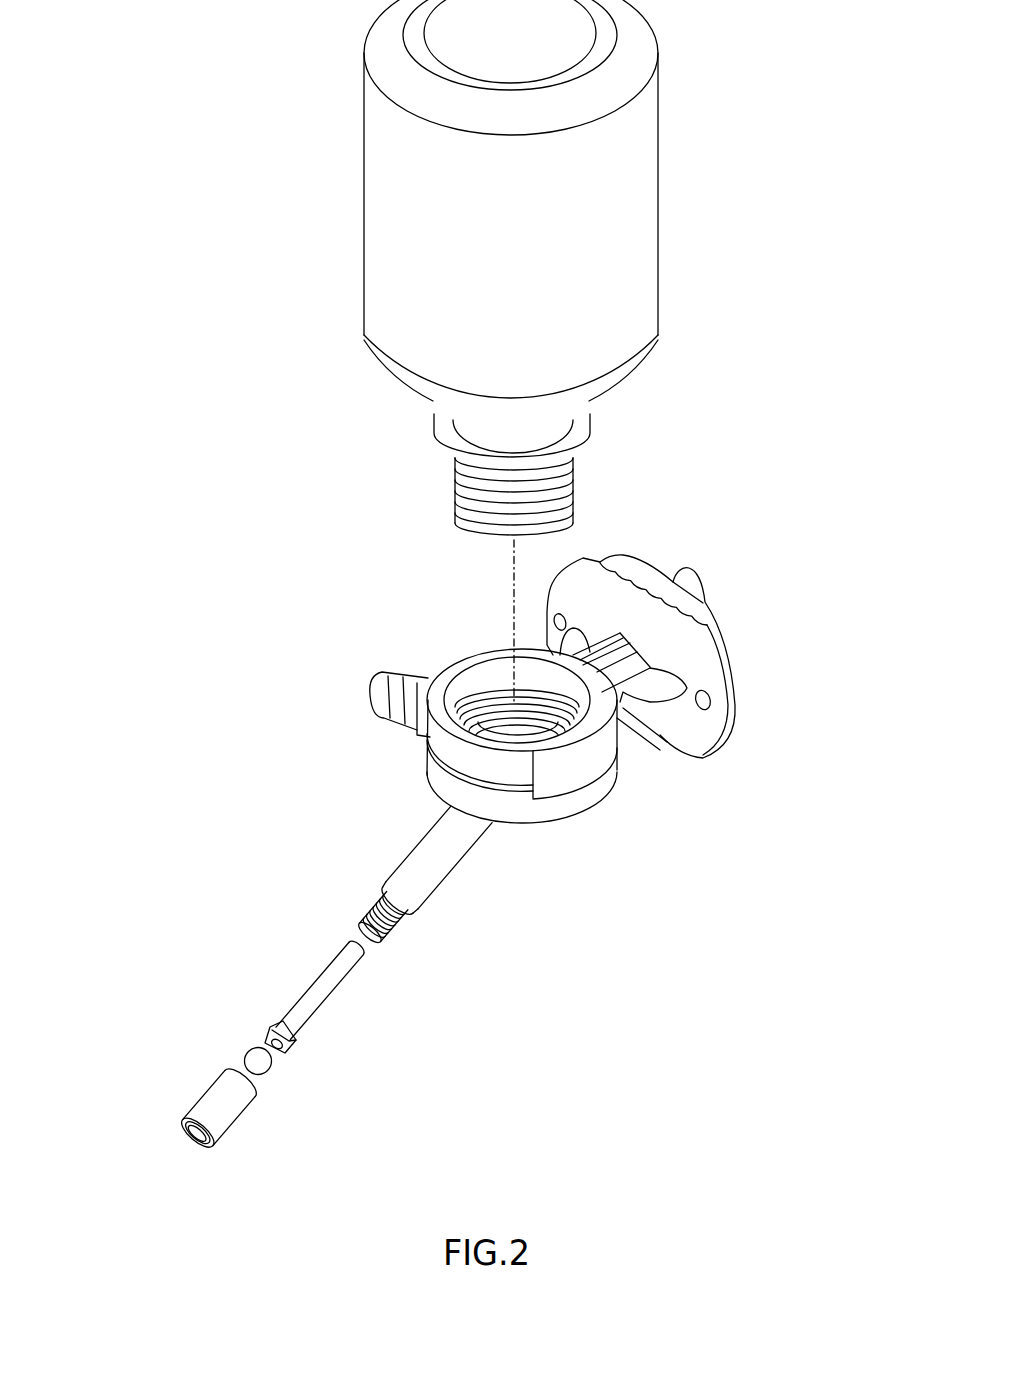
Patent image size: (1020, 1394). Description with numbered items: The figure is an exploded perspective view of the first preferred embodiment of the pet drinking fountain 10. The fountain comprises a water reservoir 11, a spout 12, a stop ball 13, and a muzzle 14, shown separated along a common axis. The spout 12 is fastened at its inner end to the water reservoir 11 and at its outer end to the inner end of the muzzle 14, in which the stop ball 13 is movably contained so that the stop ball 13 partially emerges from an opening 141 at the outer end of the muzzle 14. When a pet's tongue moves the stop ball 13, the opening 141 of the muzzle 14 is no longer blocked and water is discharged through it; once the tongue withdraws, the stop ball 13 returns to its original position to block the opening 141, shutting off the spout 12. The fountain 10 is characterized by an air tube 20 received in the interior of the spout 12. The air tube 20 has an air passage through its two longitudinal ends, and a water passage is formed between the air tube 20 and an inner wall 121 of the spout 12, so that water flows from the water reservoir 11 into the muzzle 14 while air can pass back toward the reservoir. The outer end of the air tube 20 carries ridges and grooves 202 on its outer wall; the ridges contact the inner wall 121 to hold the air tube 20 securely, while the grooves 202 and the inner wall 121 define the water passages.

The pet drinking fountain 10 is at (288, 490).
The water reservoir 11 is at (637, 222).
The spout 12 is at (453, 848).
The inner wall 121 is at (357, 927).
The air tube 20 is at (272, 978).
The grooves 202 is at (253, 1040).
The stop ball 13 is at (252, 1070).
The muzzle 14 is at (225, 1117).
The opening 141 is at (195, 1137).